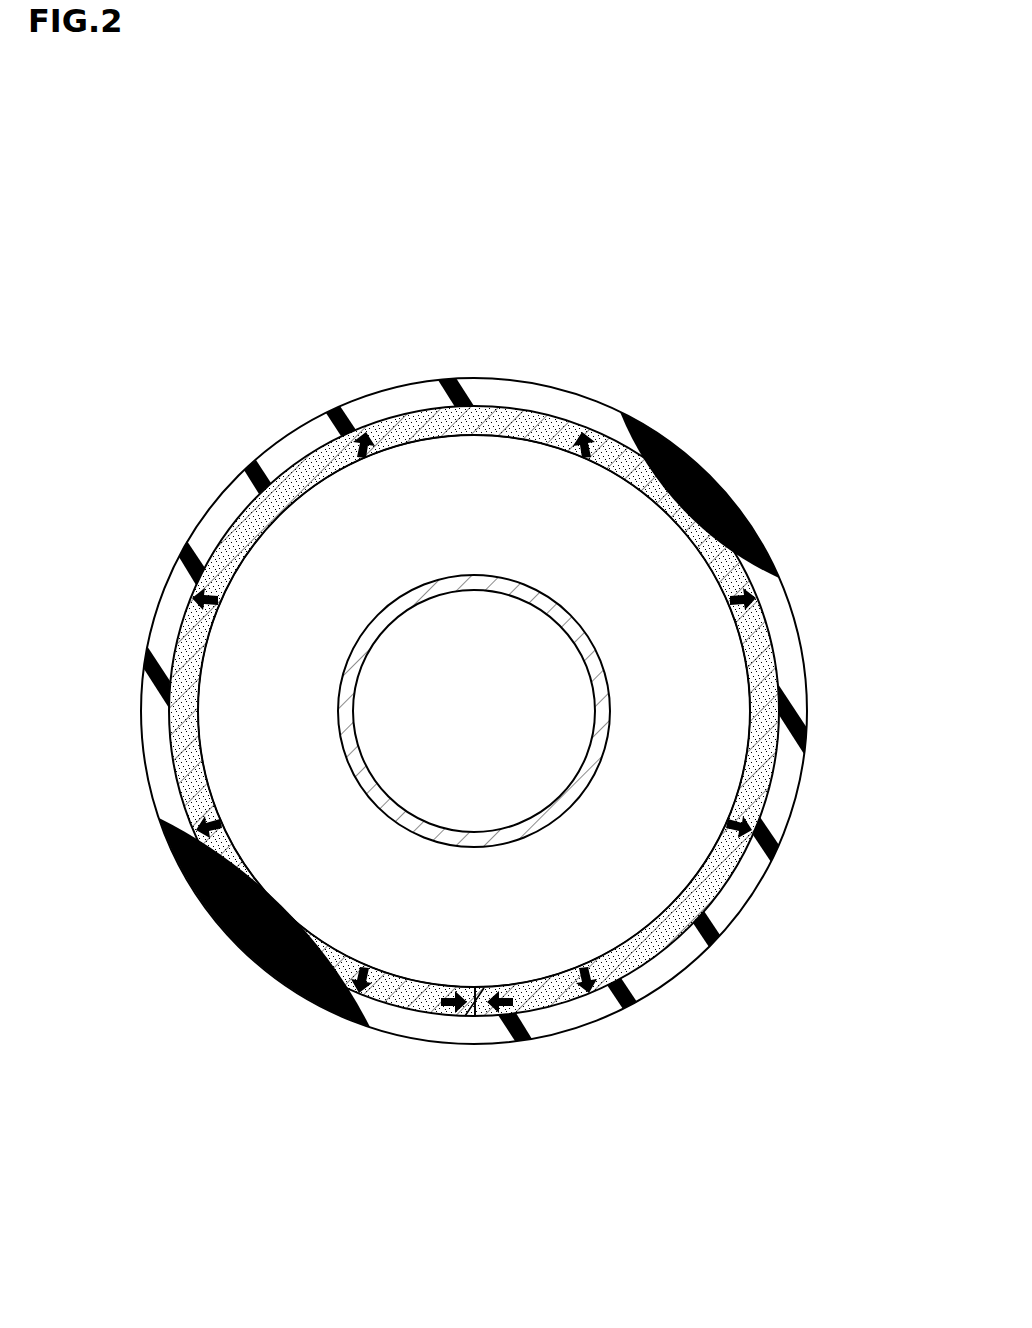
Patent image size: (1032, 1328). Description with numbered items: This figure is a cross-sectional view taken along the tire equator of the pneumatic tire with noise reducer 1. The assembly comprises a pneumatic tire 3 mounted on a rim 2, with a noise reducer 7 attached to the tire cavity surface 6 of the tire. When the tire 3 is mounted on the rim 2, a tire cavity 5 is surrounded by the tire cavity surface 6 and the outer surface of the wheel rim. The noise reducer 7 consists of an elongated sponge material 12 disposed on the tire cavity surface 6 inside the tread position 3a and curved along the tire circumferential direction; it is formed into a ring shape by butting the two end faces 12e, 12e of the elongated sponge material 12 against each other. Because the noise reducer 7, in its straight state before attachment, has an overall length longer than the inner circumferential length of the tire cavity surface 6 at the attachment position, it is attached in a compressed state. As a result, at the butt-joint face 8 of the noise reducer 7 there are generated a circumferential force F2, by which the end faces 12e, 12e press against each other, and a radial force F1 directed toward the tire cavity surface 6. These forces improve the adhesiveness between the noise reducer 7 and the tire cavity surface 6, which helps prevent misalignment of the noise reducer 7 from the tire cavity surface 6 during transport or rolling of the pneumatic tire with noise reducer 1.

The pneumatic tire with noise reducer 1 is at (696, 342).
The rim 2 is at (380, 800).
The pneumatic tire 3 is at (751, 496).
The tread position 3a is at (795, 604).
The tire cavity 5 is at (441, 918).
The tire cavity surface 6 is at (768, 744).
The noise reducer 7 is at (474, 636).
The elongated sponge material 12 is at (514, 418).
The end faces 12e is at (476, 1003).
The butt-joint face 8 is at (478, 990).
The radial force F1 is at (357, 437).
The circumferential force F2 is at (450, 1005).